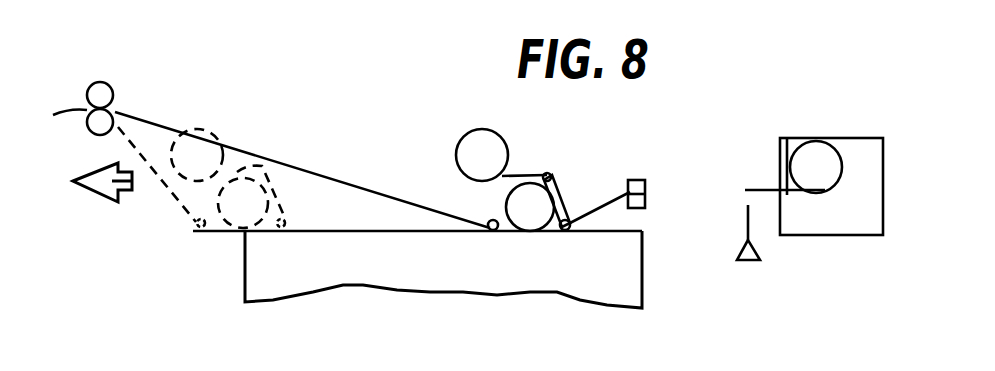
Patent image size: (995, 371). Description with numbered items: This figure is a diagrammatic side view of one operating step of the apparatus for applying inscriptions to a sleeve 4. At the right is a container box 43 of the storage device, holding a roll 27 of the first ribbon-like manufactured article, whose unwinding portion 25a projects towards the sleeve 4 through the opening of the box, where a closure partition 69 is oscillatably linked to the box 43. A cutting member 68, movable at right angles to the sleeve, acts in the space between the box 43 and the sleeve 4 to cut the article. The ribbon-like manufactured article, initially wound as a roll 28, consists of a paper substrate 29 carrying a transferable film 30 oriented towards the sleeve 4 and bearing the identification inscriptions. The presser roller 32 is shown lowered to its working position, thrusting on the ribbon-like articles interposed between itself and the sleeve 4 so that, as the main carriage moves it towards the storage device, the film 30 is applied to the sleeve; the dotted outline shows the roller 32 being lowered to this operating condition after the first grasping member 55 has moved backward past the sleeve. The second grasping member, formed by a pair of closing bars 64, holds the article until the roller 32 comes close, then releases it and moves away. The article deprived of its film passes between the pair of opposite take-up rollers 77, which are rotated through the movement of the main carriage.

The sleeve 4 is at (623, 270).
The unwinding portion 25a is at (775, 187).
The roll 27 is at (817, 152).
The roll 28 is at (212, 129).
The paper substrate 29 is at (353, 185).
The transferable film 30 is at (334, 230).
The presser roller 32 is at (255, 202).
The container box 43 is at (862, 145).
The first grasping member 55 is at (84, 176).
The closing bars 64 is at (645, 182).
The cutting member 68 is at (738, 252).
The closure partition 69 is at (785, 178).
The take-up rollers 77 is at (122, 110).